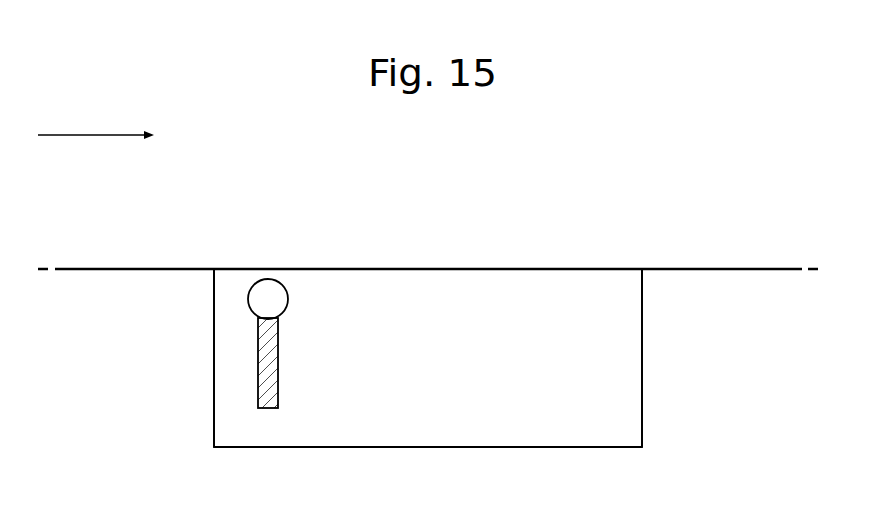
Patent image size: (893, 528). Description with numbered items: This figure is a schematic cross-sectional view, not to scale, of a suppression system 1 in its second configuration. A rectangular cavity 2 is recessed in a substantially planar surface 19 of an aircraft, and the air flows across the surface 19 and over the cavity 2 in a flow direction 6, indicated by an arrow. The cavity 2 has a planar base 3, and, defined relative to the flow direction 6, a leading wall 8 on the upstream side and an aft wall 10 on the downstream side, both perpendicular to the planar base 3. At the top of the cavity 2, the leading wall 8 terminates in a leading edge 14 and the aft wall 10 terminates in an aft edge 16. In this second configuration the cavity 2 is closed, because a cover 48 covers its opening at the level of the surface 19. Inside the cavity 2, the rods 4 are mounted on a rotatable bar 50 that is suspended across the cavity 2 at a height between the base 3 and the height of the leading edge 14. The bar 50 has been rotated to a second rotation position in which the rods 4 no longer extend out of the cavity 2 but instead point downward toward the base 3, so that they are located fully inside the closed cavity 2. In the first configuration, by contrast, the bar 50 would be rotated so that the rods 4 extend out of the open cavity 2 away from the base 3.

The suppression system 1 is at (662, 157).
The cavity 2 is at (478, 416).
The planar base 3 is at (566, 447).
The rods 4 is at (281, 366).
The flow direction 6 is at (77, 135).
The leading wall 8 is at (213, 379).
The aft wall 10 is at (644, 367).
The leading edge 14 is at (214, 267).
The aft edge 16 is at (642, 268).
The surface 19 is at (94, 269).
The cover 48 is at (443, 269).
The rotatable bar 50 is at (288, 297).